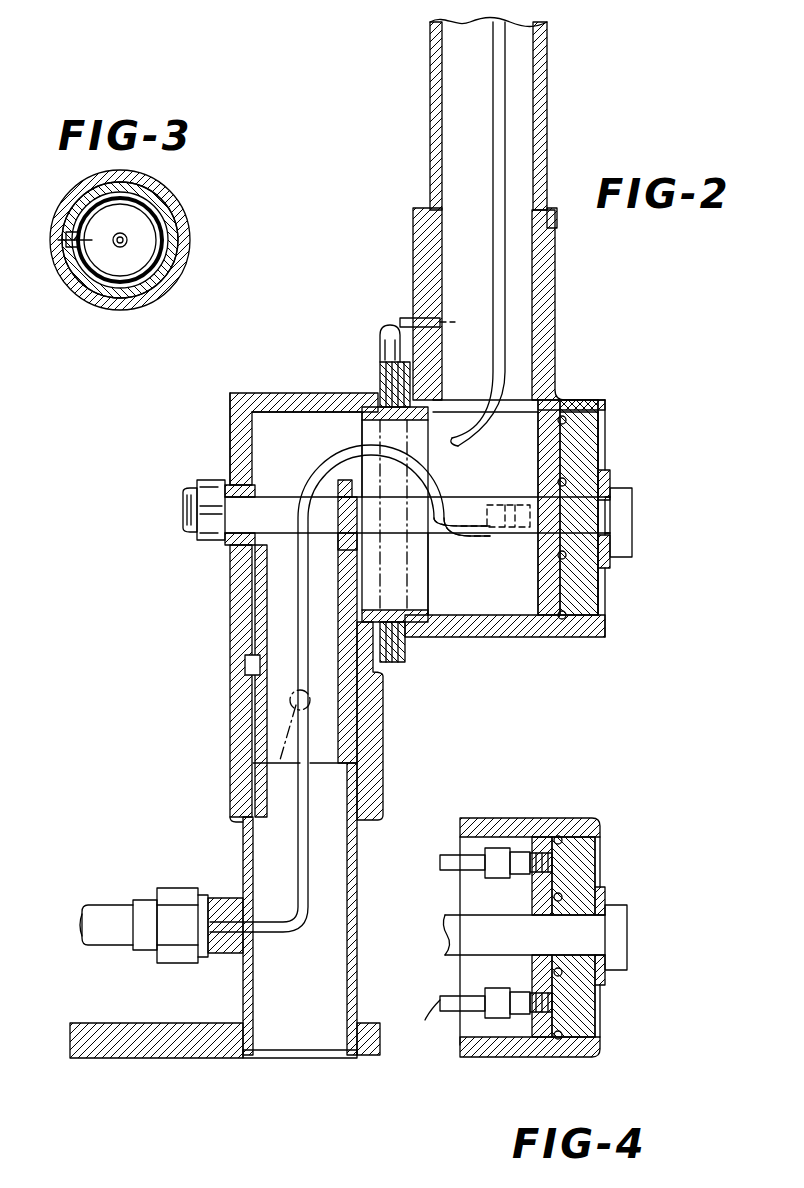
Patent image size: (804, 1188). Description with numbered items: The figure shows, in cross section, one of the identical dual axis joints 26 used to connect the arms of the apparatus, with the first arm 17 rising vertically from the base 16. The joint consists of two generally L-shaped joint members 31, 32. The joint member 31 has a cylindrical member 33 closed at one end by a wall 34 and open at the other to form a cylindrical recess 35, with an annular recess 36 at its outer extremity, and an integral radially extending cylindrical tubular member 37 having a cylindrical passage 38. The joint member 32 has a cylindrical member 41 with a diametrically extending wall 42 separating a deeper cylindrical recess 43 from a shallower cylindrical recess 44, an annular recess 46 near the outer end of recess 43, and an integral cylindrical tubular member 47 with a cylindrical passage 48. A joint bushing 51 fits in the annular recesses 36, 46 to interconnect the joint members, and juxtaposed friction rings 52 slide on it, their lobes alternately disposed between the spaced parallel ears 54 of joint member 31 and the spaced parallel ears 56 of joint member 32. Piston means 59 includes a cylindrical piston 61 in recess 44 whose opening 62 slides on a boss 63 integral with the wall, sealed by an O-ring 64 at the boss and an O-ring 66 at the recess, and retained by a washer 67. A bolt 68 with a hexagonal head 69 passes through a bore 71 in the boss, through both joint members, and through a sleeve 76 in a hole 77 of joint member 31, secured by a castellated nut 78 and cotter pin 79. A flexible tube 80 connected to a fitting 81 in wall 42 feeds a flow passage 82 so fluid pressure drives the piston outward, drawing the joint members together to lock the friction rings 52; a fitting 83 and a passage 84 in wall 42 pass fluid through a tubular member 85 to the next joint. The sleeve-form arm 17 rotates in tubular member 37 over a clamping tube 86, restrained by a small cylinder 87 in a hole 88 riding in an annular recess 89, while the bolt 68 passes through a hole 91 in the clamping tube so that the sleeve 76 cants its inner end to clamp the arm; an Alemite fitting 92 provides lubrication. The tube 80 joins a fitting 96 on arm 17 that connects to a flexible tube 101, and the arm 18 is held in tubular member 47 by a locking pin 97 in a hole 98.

In FIG. 2, the base 16 is at (100, 1035).
In FIG. 3, the first arm 17 is at (78, 282).
In FIG. 2, the first arm 17 is at (246, 876).
In FIG. 2, the arm 18 is at (547, 95).
In FIG. 2, the first dual axis joint 26 is at (158, 805).
In FIG. 2, the joint member 31 is at (218, 592).
In FIG. 2, the joint member 32 is at (572, 378).
In FIG. 2, the cylindrical member 33 is at (312, 395).
In FIG. 2, the wall 34 is at (232, 425).
In FIG. 2, the cylindrical recess 35 is at (290, 412).
In FIG. 2, the annular recess 36 is at (360, 420).
In FIG. 3, the cylindrical tubular member 37 is at (102, 320).
In FIG. 2, the cylindrical tubular member 37 is at (240, 808).
In FIG. 2, the cylindrical passage 38 is at (248, 822).
In FIG. 2, the cylindrical member 41 is at (490, 640).
In FIG. 4, the cylindrical member 41 is at (520, 1055).
In FIG. 2, the wall 42 is at (538, 590).
In FIG. 4, the wall 42 is at (537, 895).
In FIG. 2, the cylindrical recess 43 is at (545, 640).
In FIG. 4, the cylindrical recess 43 is at (468, 1035).
In FIG. 2, the cylindrical recess 44 is at (596, 640).
In FIG. 4, the cylindrical recess 44 is at (580, 1055).
In FIG. 2, the annular recess 46 is at (416, 622).
In FIG. 2, the cylindrical tubular member 47 is at (553, 293).
In FIG. 2, the cylindrical passage 48 is at (550, 245).
In FIG. 2, the joint bushing 51 is at (365, 604).
In FIG. 2, the friction rings 52 is at (384, 615).
In FIG. 2, the spaced parallel ears 54 is at (383, 686).
In FIG. 2, the spaced parallel ears 56 is at (382, 365).
In FIG. 2, the piston means 59 is at (606, 602).
In FIG. 4, the piston means 59 is at (608, 1035).
In FIG. 2, the cylindrical piston 61 is at (605, 595).
In FIG. 4, the cylindrical piston 61 is at (603, 875).
In FIG. 2, the opening 62 is at (612, 585).
In FIG. 2, the boss 63 is at (590, 470).
In FIG. 4, the boss 63 is at (600, 900).
In FIG. 2, the O-ring 64 is at (555, 560).
In FIG. 2, the O-ring 66 is at (562, 620).
In FIG. 2, the washer 67 is at (612, 497).
In FIG. 4, the washer 67 is at (605, 985).
In FIG. 2, the bolt 68 is at (433, 540).
In FIG. 4, the bolt 68 is at (453, 960).
In FIG. 2, the hexagonal head 69 is at (632, 535).
In FIG. 4, the hexagonal head 69 is at (628, 918).
In FIG. 2, the bore 71 is at (510, 503).
In FIG. 2, the sleeve 76 is at (240, 552).
In FIG. 2, the hole 77 is at (232, 470).
In FIG. 2, the castellated nut 78 is at (200, 536).
In FIG. 2, the cotter pin 79 is at (186, 508).
In FIG. 2, the flexible tube 80 is at (308, 895).
In FIG. 4, the flexible tube 80 is at (422, 1018).
In FIG. 2, the fitting 81 is at (480, 540).
In FIG. 4, the fitting 81 is at (480, 1055).
In FIG. 4, the flow passage 82 is at (550, 1005).
In FIG. 4, the fitting 83 is at (497, 855).
In FIG. 4, the passage 84 is at (575, 870).
In FIG. 2, the tubular member 85 is at (493, 222).
In FIG. 3, the clamping tube 86 is at (138, 300).
In FIG. 2, the clamping tube 86 is at (258, 630).
In FIG. 3, the small cylinder 87 is at (62, 244).
In FIG. 2, the small cylinder 87 is at (247, 672).
In FIG. 2, the hole 88 is at (240, 690).
In FIG. 3, the annular recess 89 is at (74, 232).
In FIG. 2, the annular recess 89 is at (336, 675).
In FIG. 2, the hole 91 is at (284, 497).
In FIG. 2, the Alemite fitting 92 is at (300, 750).
In FIG. 2, the fitting 96 is at (178, 965).
In FIG. 2, the locking pin 97 is at (403, 320).
In FIG. 2, the hole 98 is at (440, 320).
In FIG. 2, the flexible tube 101 is at (100, 910).